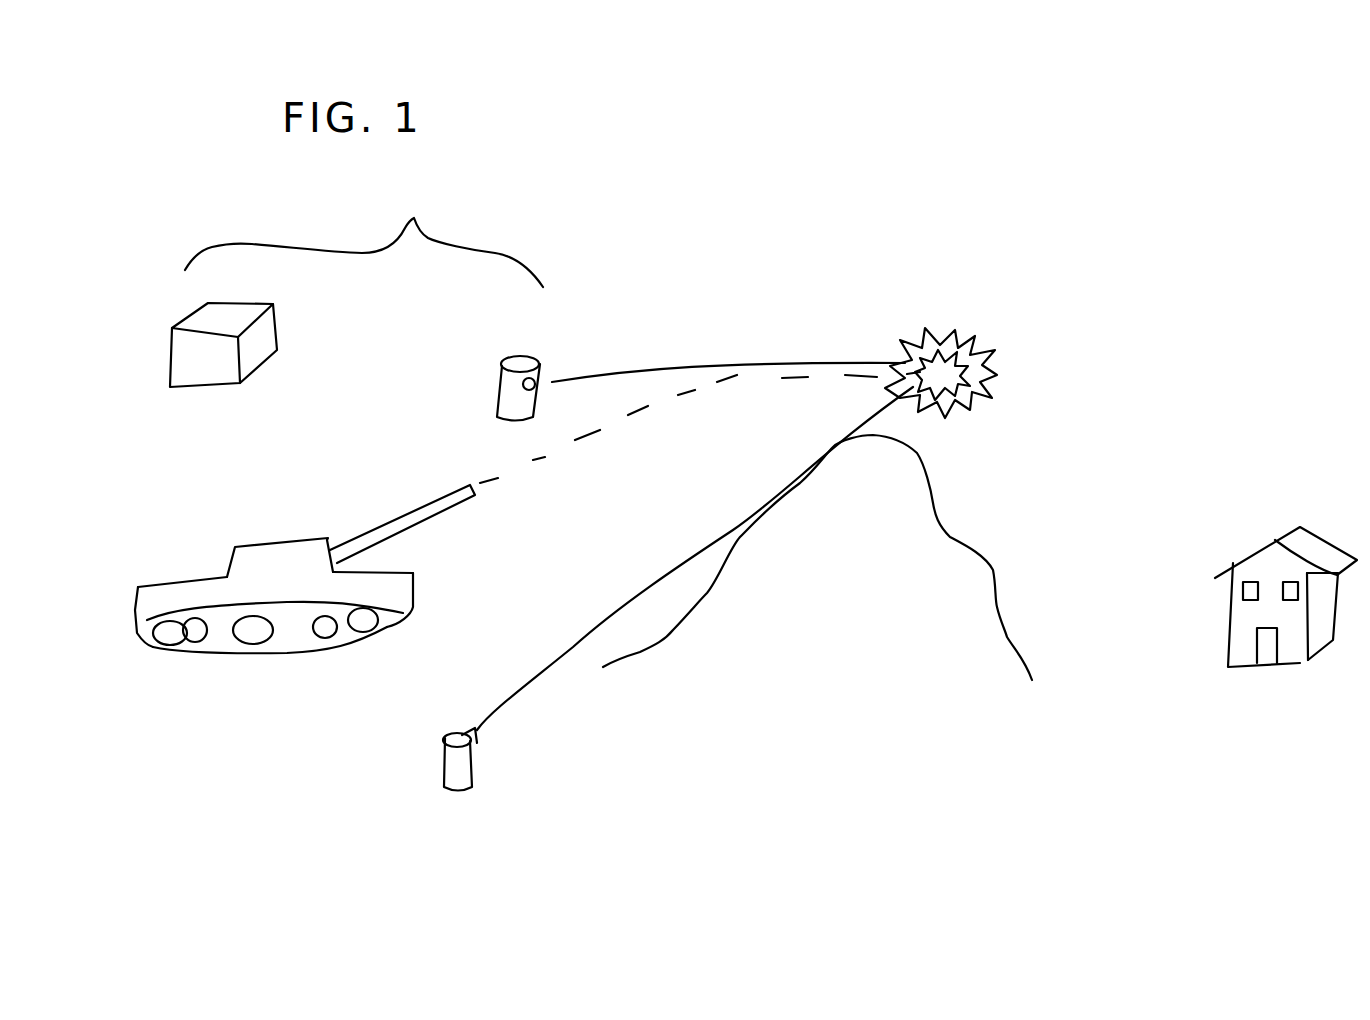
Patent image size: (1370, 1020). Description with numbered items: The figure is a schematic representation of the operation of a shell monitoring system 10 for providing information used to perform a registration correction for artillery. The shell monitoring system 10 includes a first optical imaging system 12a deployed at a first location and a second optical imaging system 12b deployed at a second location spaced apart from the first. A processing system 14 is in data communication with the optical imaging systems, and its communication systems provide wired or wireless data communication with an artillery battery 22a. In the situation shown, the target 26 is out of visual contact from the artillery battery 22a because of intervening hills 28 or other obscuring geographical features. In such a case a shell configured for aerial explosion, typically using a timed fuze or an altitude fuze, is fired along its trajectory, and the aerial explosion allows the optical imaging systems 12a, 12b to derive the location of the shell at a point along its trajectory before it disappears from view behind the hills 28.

The shell monitoring system 10 is at (364, 234).
The first optical imaging system 12a is at (501, 402).
The second optical imaging system 12b is at (442, 760).
The processing system 14 is at (276, 337).
The artillery battery 22a is at (268, 547).
The target 26 is at (1320, 540).
The intervening hills 28 is at (867, 568).